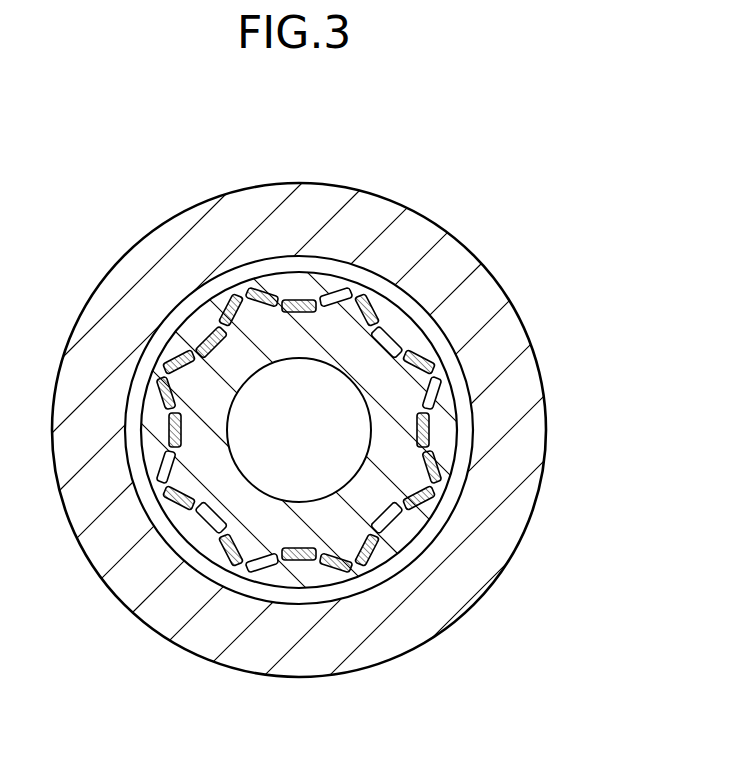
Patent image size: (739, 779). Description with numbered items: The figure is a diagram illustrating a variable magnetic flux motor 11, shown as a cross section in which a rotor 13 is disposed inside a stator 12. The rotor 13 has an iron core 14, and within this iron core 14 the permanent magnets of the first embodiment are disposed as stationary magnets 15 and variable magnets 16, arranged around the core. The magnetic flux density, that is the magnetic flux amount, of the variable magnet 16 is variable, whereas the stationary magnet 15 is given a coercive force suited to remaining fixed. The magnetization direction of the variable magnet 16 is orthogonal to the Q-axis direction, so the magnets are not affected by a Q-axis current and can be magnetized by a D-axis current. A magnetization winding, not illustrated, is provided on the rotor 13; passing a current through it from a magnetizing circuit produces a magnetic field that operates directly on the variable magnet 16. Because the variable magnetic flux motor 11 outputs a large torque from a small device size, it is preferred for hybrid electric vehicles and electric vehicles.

The variable magnetic flux motor 11 is at (483, 186).
The stator 12 is at (531, 516).
The rotor 13 is at (374, 414).
The iron core 14 is at (414, 348).
The stationary magnet 15 is at (432, 378).
The variable magnet 16 is at (430, 417).